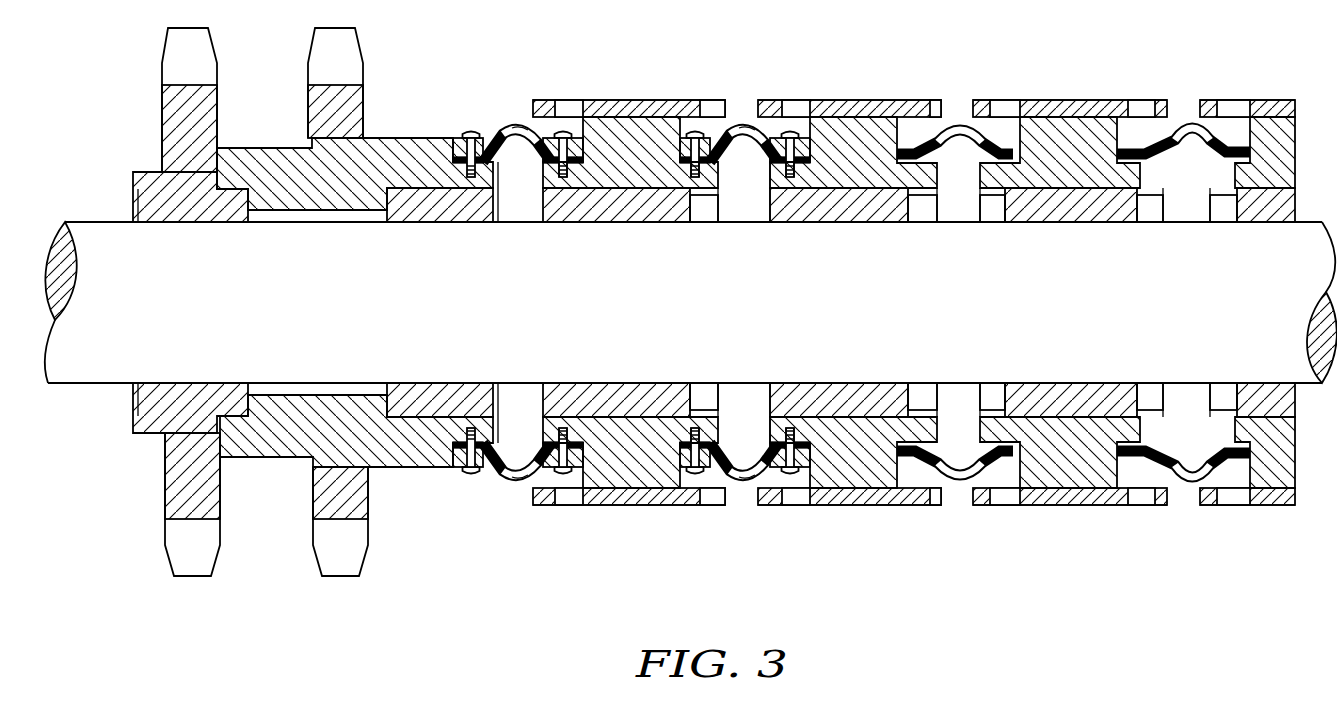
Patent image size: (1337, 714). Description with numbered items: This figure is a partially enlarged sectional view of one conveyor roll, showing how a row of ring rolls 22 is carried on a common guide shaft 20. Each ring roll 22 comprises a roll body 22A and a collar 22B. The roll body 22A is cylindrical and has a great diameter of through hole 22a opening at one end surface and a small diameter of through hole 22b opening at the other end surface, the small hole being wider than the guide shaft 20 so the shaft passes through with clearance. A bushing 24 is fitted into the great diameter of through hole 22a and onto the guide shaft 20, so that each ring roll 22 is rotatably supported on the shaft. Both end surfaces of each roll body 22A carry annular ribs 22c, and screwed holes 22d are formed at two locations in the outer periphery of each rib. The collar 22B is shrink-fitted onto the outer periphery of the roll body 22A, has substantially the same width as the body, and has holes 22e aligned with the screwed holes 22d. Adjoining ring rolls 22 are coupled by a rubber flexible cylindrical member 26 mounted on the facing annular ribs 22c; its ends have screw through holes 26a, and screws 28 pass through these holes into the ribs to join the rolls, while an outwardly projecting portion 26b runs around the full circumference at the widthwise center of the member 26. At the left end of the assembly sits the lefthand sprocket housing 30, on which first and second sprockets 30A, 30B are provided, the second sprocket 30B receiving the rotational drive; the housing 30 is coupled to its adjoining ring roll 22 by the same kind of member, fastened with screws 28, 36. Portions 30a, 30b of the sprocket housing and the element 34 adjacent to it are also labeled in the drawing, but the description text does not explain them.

The guide shaft 20 is at (100, 220).
The ring roll 22 is at (630, 520).
The roll body 22A is at (612, 128).
The collar 22B is at (633, 100).
The great diameter of through hole 22a is at (640, 222).
The small diameter of through hole 22b is at (714, 215).
The annular rib 22c is at (518, 215).
The screwed hole 22d is at (562, 195).
The hole 22e is at (572, 102).
The bushing 24 is at (588, 222).
The flexible cylindrical member 26 is at (503, 118).
The screw through hole 26a is at (460, 158).
The outwardly projecting portion 26b is at (518, 128).
The screw 28 is at (561, 128).
The lefthand sprocket housing 30 is at (262, 138).
The first sprocket 30A is at (170, 562).
The second sprocket 30B is at (318, 562).
The sprocket hub portion 30a is at (500, 432).
The sprocket hub portion 30b is at (472, 192).
The collar 34 is at (148, 195).
The screw 36 is at (470, 130).